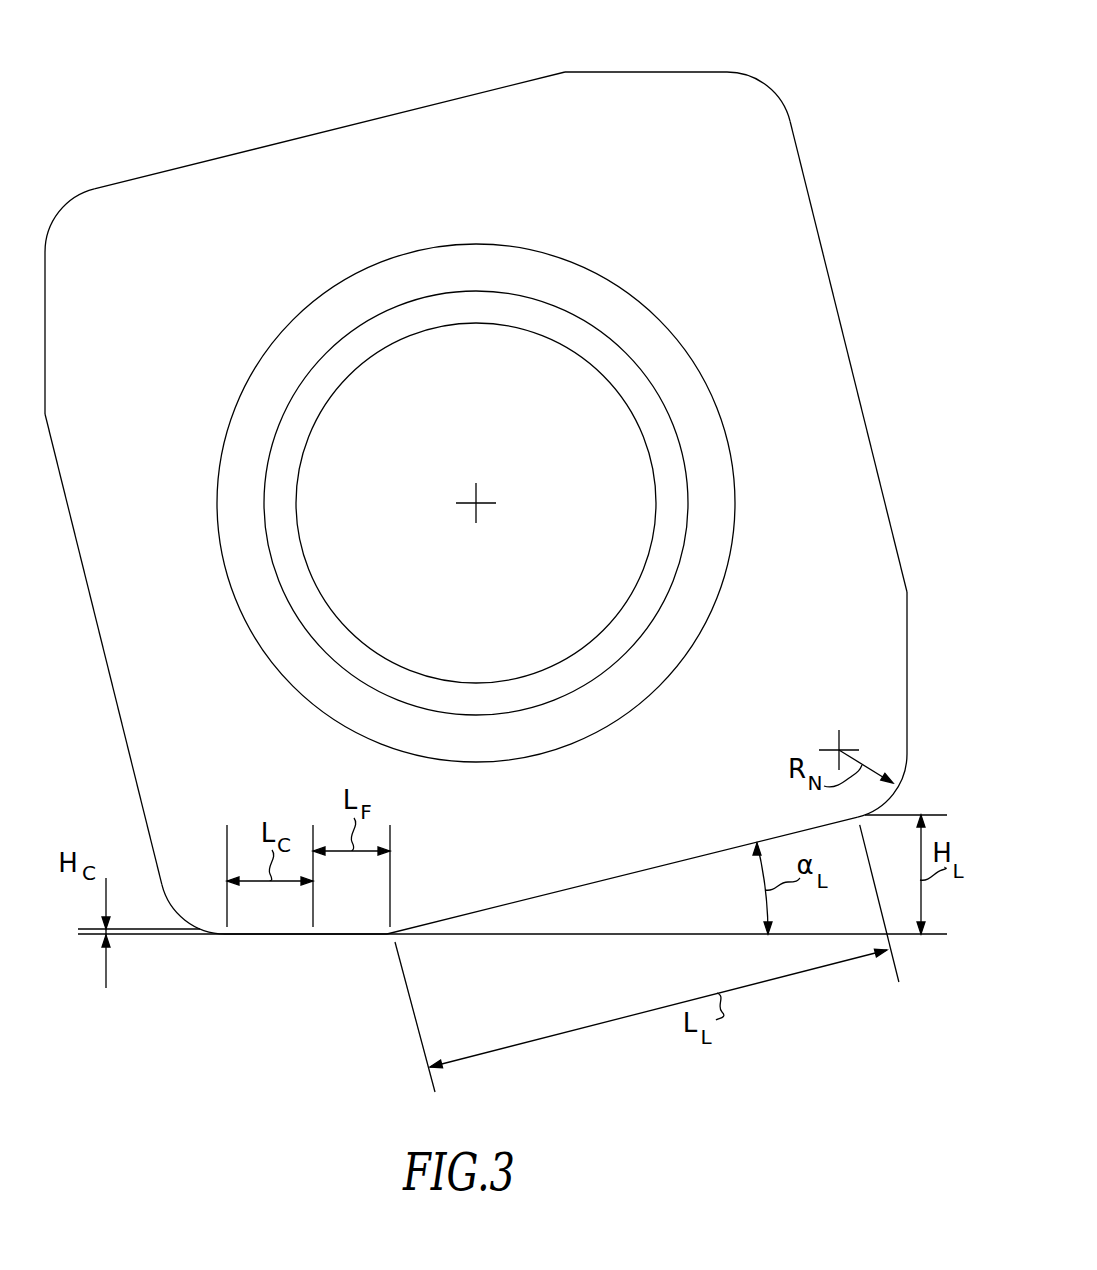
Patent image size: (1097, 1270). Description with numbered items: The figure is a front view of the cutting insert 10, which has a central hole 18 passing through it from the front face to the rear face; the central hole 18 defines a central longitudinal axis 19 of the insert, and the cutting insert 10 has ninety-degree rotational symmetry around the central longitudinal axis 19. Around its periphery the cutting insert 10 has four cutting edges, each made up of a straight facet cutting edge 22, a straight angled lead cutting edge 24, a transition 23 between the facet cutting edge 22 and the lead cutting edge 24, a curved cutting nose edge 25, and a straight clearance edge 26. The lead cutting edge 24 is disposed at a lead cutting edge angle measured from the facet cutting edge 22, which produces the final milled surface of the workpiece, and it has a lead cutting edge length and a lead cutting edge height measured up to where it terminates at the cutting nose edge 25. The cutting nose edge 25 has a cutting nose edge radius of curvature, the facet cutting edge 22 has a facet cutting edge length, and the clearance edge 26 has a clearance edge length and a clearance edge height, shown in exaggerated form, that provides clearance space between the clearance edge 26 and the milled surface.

The cutting insert 10 is at (168, 106).
The central hole 18 is at (533, 334).
The central longitudinal axis 19 is at (478, 505).
The facet cutting edge 22 is at (606, 72).
The transition 23 is at (567, 72).
The angled lead cutting edge 24 is at (331, 129).
The cutting nose edge 25 is at (767, 87).
The clearance edge 26 is at (695, 72).